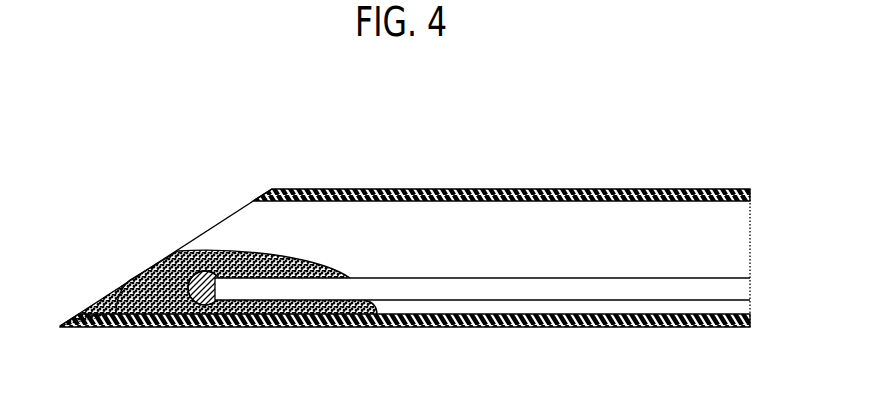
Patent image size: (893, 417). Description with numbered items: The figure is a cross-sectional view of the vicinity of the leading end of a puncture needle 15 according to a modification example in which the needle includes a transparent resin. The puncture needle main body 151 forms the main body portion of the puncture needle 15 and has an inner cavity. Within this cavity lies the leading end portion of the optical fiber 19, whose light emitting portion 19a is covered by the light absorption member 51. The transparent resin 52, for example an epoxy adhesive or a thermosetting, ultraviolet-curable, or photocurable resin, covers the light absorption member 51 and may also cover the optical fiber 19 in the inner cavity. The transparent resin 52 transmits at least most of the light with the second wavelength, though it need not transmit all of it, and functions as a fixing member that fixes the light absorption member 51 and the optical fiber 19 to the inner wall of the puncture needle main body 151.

The puncture needle 15 is at (405, 204).
The puncture needle main body 151 is at (313, 188).
The optical fiber 19 is at (598, 278).
The light emitting portion 19a is at (187, 276).
The light absorption member 51 is at (186, 291).
The transparent resin 52 is at (113, 293).